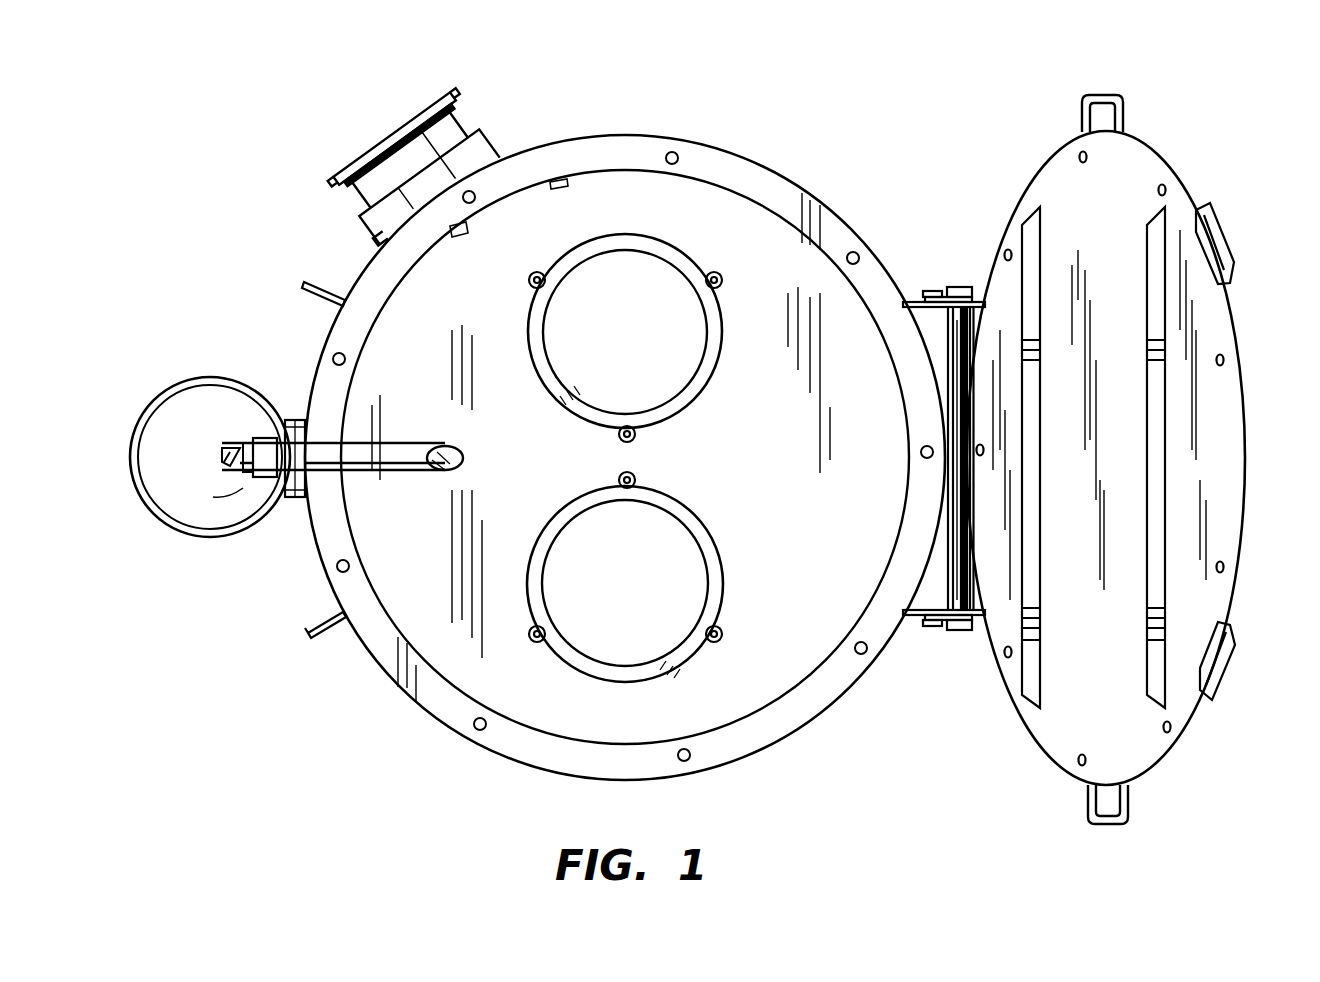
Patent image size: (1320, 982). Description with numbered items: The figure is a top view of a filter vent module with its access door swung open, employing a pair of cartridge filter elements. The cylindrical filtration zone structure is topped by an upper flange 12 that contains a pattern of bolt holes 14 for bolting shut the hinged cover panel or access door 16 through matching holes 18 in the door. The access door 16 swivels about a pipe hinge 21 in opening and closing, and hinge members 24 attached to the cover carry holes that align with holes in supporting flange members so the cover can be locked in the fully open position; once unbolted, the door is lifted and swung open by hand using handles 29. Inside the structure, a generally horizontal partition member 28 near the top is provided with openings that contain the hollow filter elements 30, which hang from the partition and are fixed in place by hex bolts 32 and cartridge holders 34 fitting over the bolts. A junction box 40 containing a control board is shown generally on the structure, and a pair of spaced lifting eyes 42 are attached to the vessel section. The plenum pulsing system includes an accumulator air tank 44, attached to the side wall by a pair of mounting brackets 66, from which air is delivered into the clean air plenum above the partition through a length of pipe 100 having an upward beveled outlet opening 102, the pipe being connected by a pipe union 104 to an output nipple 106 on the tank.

The upper flange 12 is at (722, 148).
The bolt holes 14 is at (866, 654).
The access door 16 is at (1060, 200).
The matching holes 18 is at (1224, 568).
The pipe hinge 21 is at (955, 284).
The hinge members 24 is at (972, 300).
The partition member 28 is at (839, 548).
The handles 29 is at (1088, 790).
The hollow filter elements 30 is at (682, 344).
The hex bolts 32 is at (722, 278).
The cartridge holders 34 is at (710, 386).
The junction box 40 is at (454, 70).
The lifting eyes 42 is at (312, 287).
The accumulator air tank 44 is at (224, 374).
The mounting brackets 66 is at (296, 420).
The pipe 100 is at (348, 440).
The beveled outlet opening 102 is at (463, 456).
The pipe union 104 is at (265, 437).
The output nipple 106 is at (224, 456).